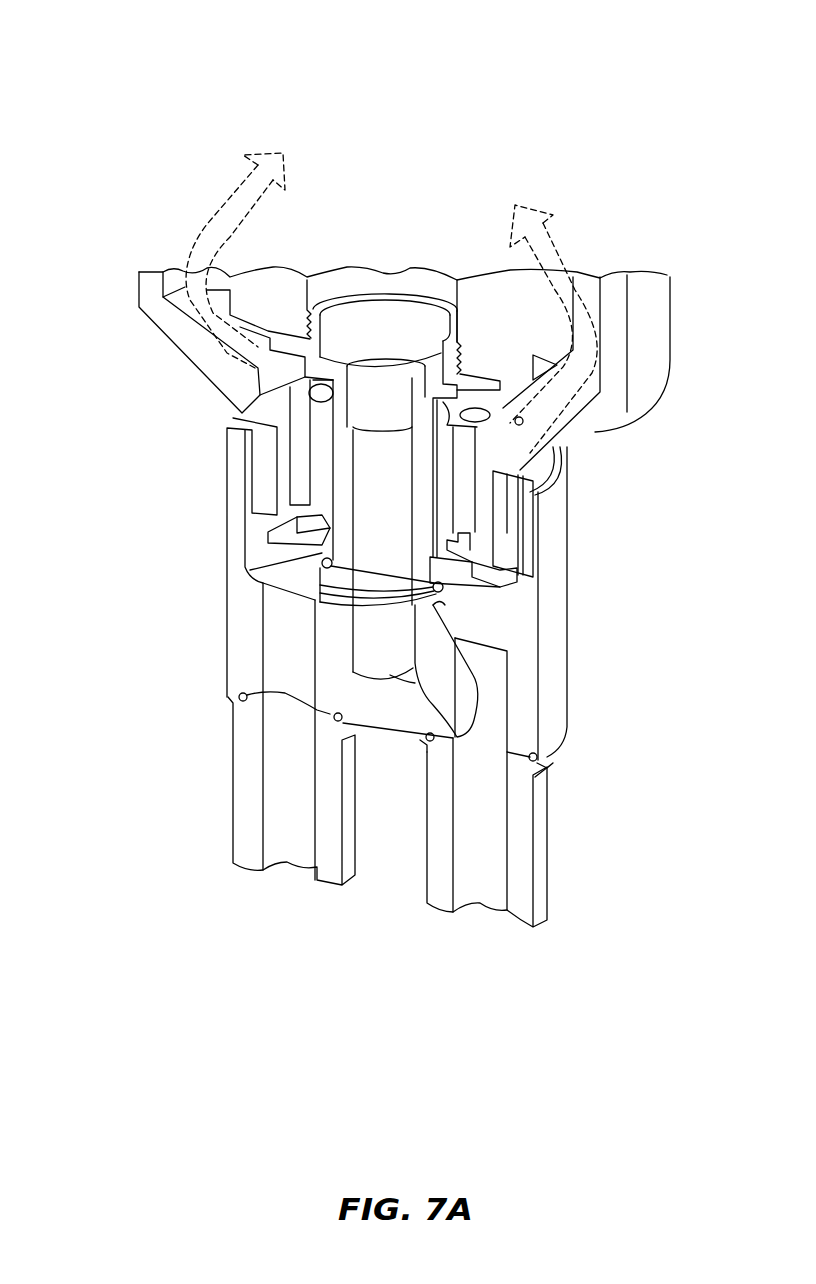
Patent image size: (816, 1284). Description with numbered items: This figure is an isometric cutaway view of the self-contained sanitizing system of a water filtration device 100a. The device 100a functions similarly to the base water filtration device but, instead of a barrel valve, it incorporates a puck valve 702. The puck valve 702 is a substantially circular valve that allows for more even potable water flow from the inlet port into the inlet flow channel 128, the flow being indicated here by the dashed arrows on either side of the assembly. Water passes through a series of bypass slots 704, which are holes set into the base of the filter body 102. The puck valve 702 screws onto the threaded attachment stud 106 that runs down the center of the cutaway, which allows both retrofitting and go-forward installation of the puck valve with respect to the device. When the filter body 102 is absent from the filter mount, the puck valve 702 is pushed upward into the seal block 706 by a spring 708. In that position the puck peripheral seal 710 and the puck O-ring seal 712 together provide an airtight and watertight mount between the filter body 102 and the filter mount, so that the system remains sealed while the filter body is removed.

The water filtration device 100a is at (80, 33).
The filter body 102 is at (178, 326).
The threaded attachment stud 106 is at (422, 490).
The inlet flow channel 128 is at (212, 228).
The puck valve 702 is at (315, 545).
The bypass slots 704 is at (478, 413).
The seal block 706 is at (505, 535).
The spring 708 is at (315, 595).
The puck peripheral seal 710 is at (520, 570).
The puck O-ring seal 712 is at (443, 607).